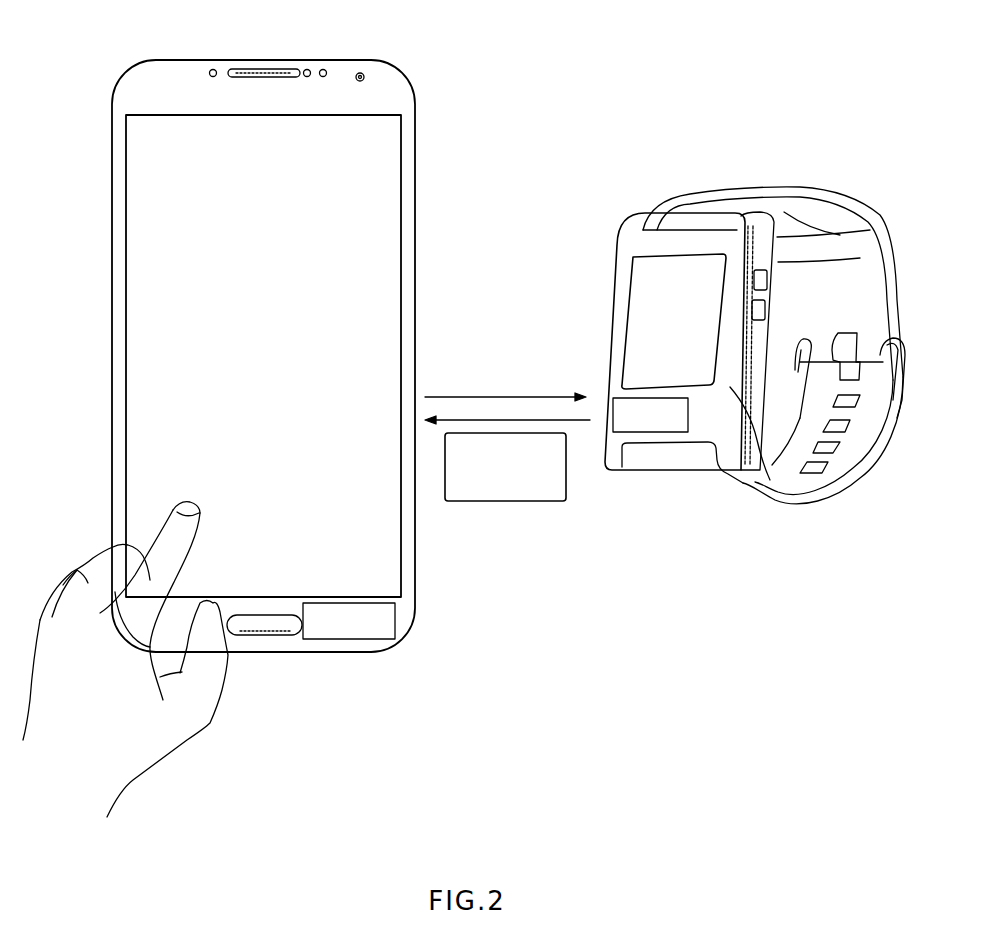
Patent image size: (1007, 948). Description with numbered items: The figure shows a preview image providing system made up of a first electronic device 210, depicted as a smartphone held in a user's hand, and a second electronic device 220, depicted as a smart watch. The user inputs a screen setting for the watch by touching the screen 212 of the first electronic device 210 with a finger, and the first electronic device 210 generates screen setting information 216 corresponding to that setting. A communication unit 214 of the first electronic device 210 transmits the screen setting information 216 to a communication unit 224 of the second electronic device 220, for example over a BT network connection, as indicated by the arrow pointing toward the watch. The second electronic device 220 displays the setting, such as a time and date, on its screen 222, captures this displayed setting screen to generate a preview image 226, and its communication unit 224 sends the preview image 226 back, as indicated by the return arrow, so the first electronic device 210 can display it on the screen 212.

The first electronic device 210 is at (355, 60).
The screen of the first electronic device 212 is at (402, 232).
The communication unit of the first electronic device 214 is at (396, 625).
The screen setting information 216 is at (507, 348).
The second electronic device 220 is at (773, 297).
The screen of the second electronic device 222 is at (712, 382).
The communication unit of the second electronic device 224 is at (647, 432).
The preview image 226 is at (505, 503).